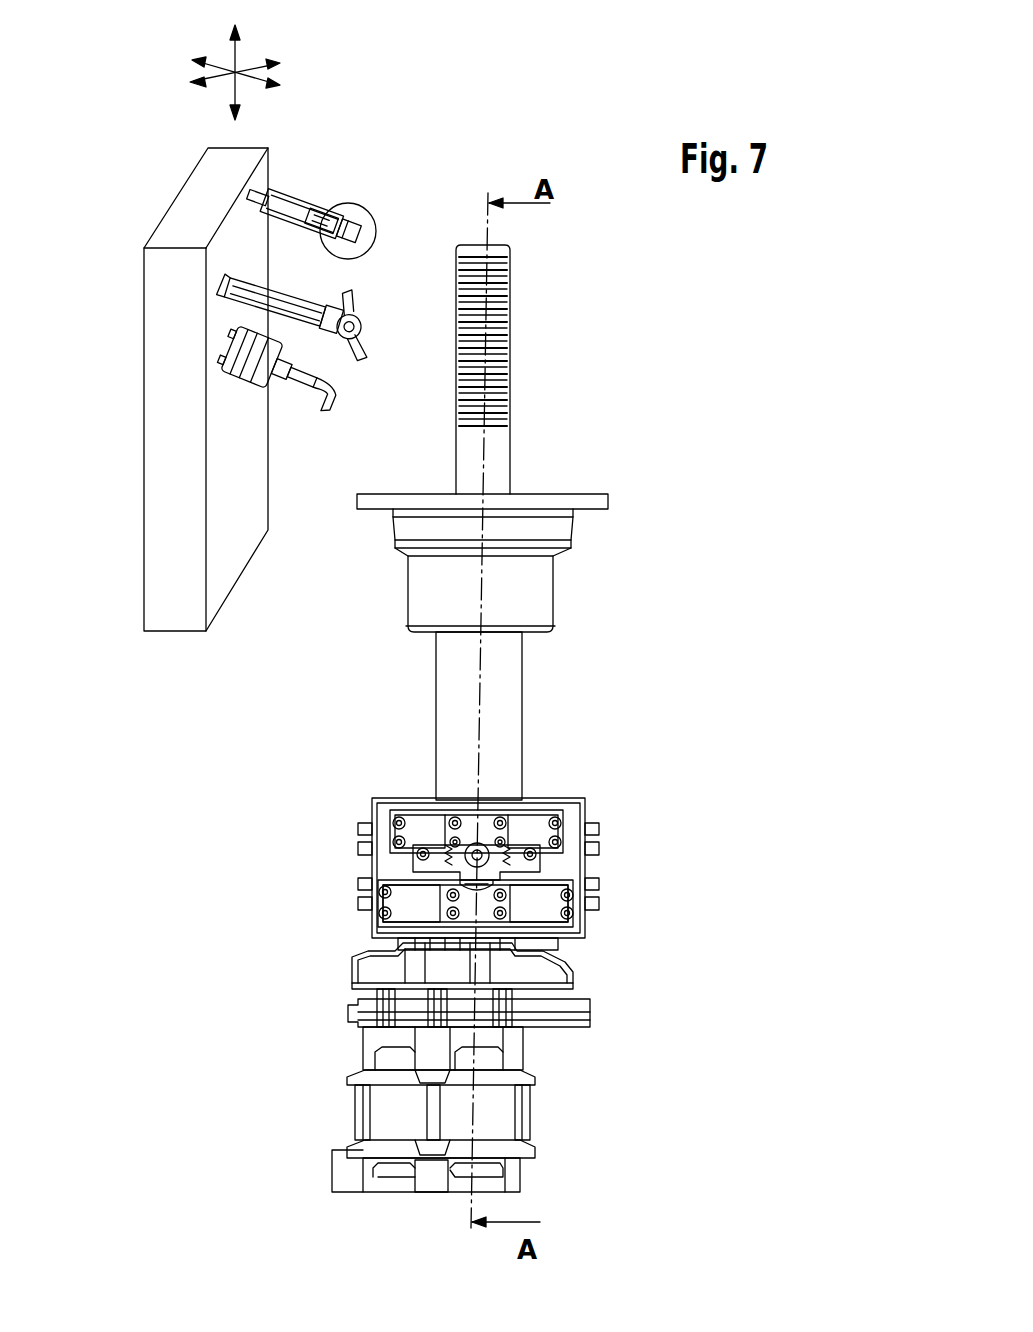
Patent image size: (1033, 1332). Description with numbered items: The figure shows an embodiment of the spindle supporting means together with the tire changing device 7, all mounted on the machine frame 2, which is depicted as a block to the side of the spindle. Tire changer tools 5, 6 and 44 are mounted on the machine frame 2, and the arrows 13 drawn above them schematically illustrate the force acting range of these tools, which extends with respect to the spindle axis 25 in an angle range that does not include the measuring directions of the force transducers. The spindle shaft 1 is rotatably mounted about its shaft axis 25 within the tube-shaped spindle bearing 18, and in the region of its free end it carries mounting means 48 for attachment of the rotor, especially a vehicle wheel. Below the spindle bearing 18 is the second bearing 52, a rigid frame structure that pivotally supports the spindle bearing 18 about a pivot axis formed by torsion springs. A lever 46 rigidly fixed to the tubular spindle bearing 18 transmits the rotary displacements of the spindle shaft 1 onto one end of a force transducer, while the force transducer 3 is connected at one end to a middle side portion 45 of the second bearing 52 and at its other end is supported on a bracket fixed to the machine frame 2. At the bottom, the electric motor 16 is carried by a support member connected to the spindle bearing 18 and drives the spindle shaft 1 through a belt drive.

The spindle shaft 1 is at (482, 438).
The machine frame 2 is at (160, 490).
The force transducer 3 is at (505, 862).
The tire changer tool 5 is at (292, 377).
The tire changer tool 6 is at (360, 323).
The tire changing device 7 is at (370, 132).
The arrows 13 is at (240, 65).
The electric motor 16 is at (565, 1116).
The spindle bearing 18 is at (512, 673).
The shaft axis 25 is at (479, 707).
The tire changer tool 44 is at (352, 210).
The middle side portion 45 is at (405, 868).
The lever 46 is at (498, 870).
The mounting means 48 is at (508, 398).
The second bearing 52 is at (400, 799).